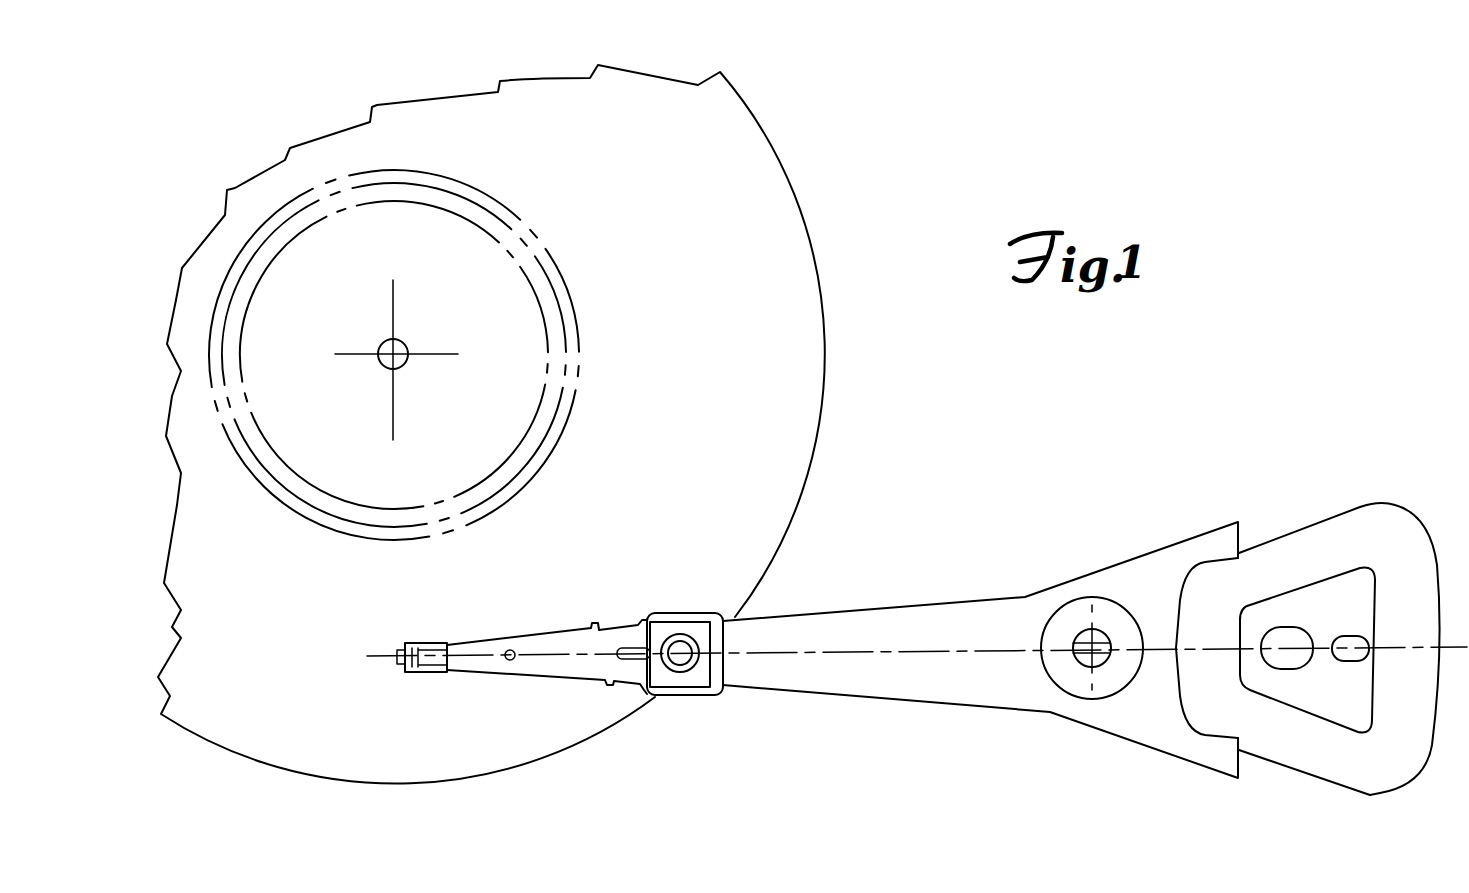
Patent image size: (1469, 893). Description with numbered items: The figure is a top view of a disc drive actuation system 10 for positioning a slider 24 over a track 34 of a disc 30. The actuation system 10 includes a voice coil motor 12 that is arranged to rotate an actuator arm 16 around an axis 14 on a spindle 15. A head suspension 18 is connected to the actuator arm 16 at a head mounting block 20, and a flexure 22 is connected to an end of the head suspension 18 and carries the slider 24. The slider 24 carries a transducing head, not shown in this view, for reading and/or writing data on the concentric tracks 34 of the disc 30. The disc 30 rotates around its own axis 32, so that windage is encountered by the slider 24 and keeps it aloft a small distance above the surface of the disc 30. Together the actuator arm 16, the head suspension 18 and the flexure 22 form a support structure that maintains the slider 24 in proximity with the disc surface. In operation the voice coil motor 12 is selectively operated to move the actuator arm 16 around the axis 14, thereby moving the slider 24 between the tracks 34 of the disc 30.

The disc drive actuation system 10 is at (1000, 530).
The voice coil motor 12 is at (1397, 505).
The axis 14 is at (1080, 660).
The spindle 15 is at (1105, 637).
The actuator arm 16 is at (818, 612).
The head suspension 18 is at (530, 630).
The head mounting block 20 is at (680, 613).
The flexure 22 is at (417, 643).
The slider 24 is at (398, 665).
The disc 30 is at (815, 446).
The axis 32 is at (403, 343).
The track 34 is at (525, 443).